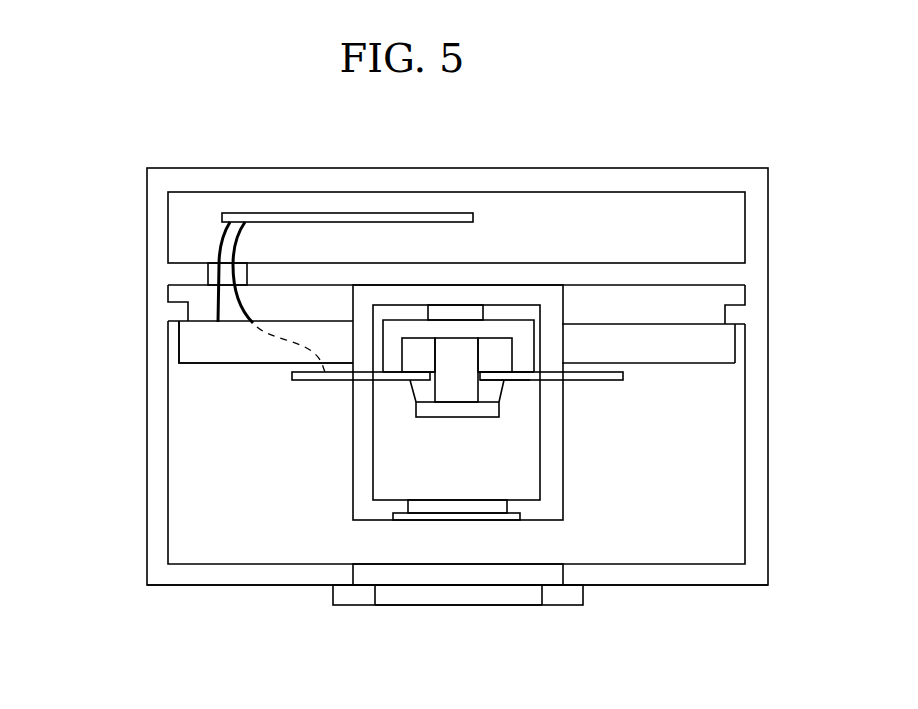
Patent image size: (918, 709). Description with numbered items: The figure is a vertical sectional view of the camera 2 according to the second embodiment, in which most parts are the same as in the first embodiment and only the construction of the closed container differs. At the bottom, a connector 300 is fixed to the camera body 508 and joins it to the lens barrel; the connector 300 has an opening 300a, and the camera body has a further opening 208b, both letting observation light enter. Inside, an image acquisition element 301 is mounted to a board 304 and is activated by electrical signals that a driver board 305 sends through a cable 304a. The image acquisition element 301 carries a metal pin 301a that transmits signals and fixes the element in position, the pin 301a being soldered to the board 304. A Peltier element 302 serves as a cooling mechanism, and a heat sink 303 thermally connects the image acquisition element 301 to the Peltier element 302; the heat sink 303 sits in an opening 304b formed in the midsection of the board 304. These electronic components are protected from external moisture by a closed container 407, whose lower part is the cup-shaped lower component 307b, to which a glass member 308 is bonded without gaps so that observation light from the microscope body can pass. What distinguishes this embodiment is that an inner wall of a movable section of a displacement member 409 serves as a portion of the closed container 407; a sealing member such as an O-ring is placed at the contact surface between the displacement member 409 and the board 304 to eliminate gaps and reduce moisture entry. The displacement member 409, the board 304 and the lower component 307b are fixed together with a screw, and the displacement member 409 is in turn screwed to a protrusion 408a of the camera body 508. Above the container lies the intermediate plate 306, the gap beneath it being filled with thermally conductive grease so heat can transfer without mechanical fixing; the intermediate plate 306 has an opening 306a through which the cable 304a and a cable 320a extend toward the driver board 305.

The camera 2 is at (732, 150).
The opening 208b is at (385, 572).
The connector 300 is at (565, 605).
The opening 300a is at (505, 593).
The image acquisition element 301 is at (437, 418).
The metal pin 301a is at (508, 395).
The Peltier element 302 is at (474, 310).
The heat sink 303 is at (522, 332).
The board 304 is at (625, 378).
The cable 304a is at (237, 302).
The opening 304b is at (486, 377).
The driver board 305 is at (297, 213).
The intermediate plate 306 is at (720, 262).
The opening 306a is at (212, 266).
The lower component 307b is at (352, 413).
The glass member 308 is at (422, 517).
The cable 320a is at (218, 295).
The closed container 407 is at (68, 340).
The protrusion 408a is at (177, 310).
The displacement member 409 is at (190, 348).
The camera body 508 is at (750, 587).